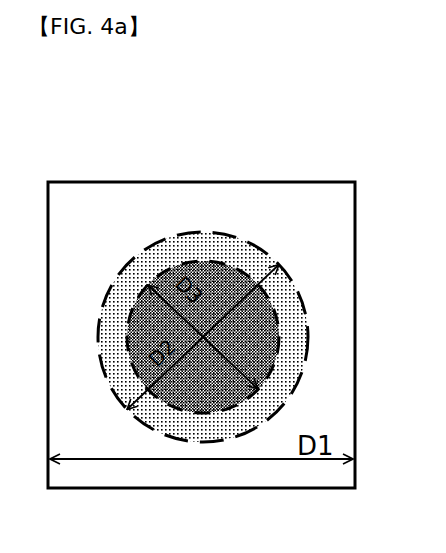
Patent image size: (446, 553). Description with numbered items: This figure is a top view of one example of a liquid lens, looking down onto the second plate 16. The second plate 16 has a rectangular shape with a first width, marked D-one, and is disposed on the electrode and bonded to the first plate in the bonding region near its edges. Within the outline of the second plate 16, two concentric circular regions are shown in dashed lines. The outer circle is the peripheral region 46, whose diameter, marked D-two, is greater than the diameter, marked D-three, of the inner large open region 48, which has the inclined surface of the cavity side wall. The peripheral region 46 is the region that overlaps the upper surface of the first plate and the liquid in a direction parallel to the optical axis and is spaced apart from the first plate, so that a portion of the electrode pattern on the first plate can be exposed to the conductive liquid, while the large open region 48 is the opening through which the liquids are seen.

The second plate 16 is at (203, 184).
The peripheral region 46 is at (278, 260).
The large open region 48 is at (150, 276).